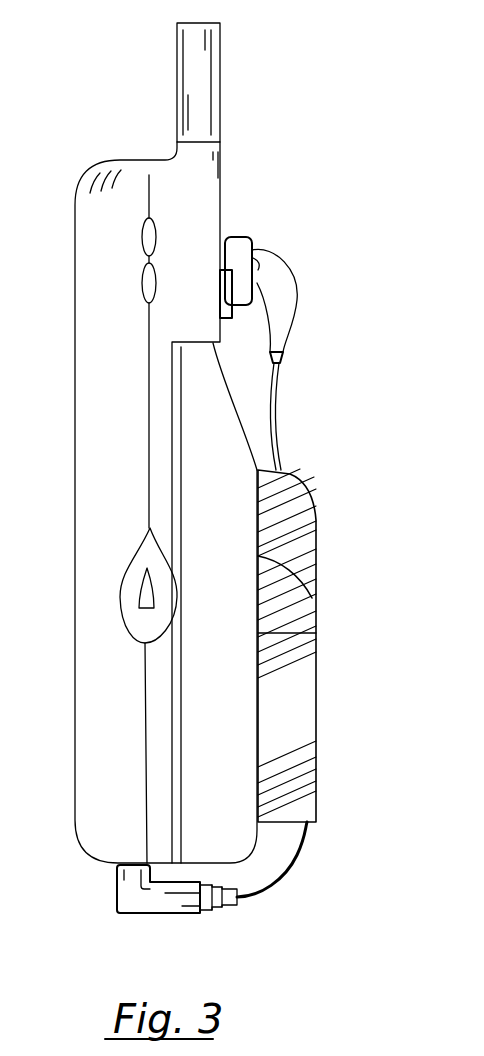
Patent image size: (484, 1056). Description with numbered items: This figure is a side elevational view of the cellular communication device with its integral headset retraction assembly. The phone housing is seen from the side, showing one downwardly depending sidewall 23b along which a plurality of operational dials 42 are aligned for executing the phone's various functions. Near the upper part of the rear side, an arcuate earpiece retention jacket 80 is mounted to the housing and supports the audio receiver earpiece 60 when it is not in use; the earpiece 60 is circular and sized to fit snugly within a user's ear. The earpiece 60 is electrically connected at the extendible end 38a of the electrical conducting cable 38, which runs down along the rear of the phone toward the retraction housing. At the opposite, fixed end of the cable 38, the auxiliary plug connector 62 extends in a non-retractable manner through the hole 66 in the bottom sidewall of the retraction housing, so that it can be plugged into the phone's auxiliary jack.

The downwardly depending sidewall 23b is at (103, 450).
The operational dials 42 is at (142, 283).
The audio receiver earpiece 60 is at (240, 237).
The earpiece retention jacket 80 is at (222, 313).
The extendible end 38a is at (277, 375).
The electrical conducting cable 38 is at (279, 448).
The hole 66 is at (310, 828).
The auxiliary plug connector 62 is at (118, 905).